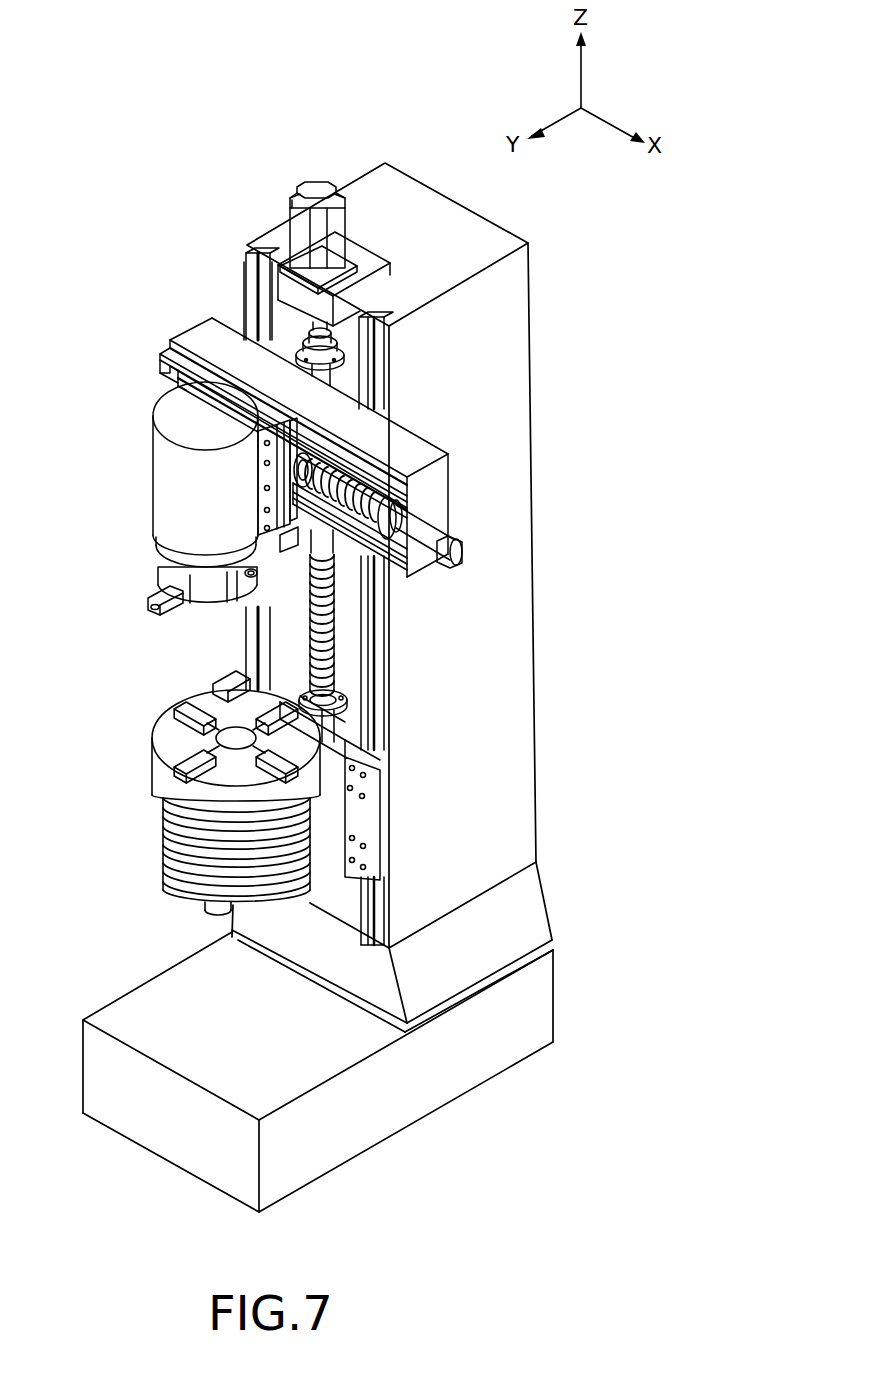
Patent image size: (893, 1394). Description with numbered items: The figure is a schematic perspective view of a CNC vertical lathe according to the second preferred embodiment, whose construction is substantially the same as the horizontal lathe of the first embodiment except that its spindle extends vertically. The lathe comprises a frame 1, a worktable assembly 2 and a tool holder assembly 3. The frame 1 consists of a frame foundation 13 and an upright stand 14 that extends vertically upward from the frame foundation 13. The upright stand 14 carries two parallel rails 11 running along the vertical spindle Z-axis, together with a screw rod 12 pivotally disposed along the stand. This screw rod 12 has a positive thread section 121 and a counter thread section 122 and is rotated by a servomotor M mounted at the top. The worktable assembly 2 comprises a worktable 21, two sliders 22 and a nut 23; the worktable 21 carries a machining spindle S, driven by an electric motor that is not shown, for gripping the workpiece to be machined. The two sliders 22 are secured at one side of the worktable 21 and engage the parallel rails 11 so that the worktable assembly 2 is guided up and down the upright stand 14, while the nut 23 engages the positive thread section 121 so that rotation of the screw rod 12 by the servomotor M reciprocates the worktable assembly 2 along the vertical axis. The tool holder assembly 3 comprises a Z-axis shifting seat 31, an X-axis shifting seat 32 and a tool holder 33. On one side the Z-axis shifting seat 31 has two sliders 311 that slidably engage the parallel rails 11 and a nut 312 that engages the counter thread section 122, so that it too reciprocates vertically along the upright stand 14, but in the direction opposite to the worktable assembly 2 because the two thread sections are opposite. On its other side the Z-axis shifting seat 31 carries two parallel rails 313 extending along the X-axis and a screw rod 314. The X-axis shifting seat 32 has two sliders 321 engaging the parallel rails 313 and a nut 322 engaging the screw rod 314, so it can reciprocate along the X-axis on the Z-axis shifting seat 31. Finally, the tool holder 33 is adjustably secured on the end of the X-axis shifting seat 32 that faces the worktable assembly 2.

The frame 1 is at (574, 875).
The frame foundation 13 is at (428, 1093).
The upright stand 14 is at (526, 775).
The parallel rails 11 is at (244, 254).
The screw rod 12 is at (328, 545).
The positive thread section 121 is at (337, 628).
The counter thread section 122 is at (331, 352).
The servomotor M is at (320, 190).
The worktable assembly 2 is at (145, 741).
The worktable 21 is at (200, 868).
The sliders 22 is at (381, 755).
The nut 23 is at (347, 705).
The machining spindle S is at (232, 735).
The tool holder assembly 3 is at (120, 340).
The Z-axis shifting seat 31 is at (198, 343).
The sliders 311 is at (241, 328).
The nut 312 is at (244, 270).
The parallel rails 313 is at (165, 362).
The screw rod 314 is at (372, 462).
The X-axis shifting seat 32 is at (160, 498).
The sliders 321 is at (298, 527).
The nut 322 is at (298, 478).
The tool holder 33 is at (165, 565).